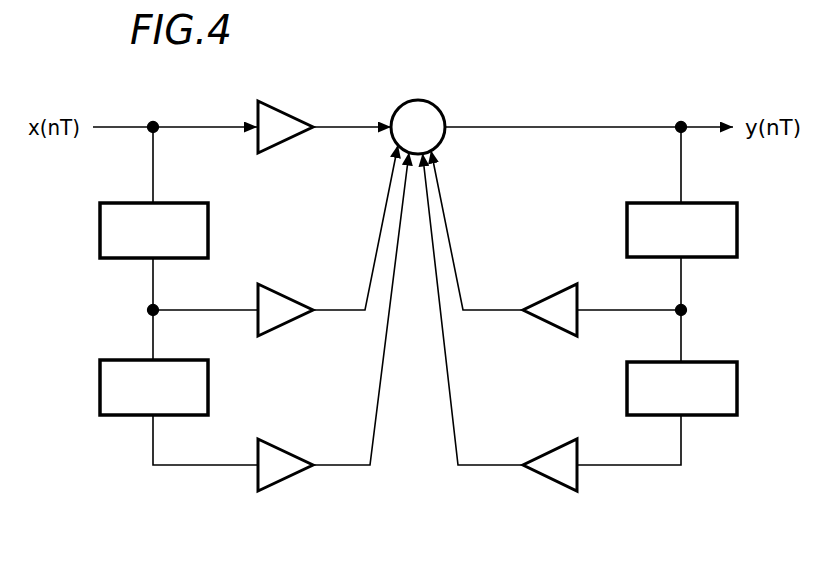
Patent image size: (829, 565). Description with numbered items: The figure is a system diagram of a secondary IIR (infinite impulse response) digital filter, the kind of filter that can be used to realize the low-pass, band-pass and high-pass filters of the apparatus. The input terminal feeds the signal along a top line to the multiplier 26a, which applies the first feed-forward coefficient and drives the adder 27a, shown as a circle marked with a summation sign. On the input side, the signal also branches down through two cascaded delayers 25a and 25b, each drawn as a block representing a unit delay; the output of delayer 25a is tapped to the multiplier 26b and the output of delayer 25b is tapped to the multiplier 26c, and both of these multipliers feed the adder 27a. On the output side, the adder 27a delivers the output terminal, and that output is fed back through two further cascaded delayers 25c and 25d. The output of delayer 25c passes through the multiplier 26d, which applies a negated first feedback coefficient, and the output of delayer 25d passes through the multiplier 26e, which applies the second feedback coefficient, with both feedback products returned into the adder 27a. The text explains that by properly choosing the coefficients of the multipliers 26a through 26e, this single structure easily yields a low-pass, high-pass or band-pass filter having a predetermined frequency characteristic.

The delayer 25a is at (178, 203).
The delayer 25b is at (179, 327).
The delayer 25c is at (704, 203).
The delayer 25d is at (704, 362).
The multiplier 26a is at (271, 147).
The multiplier 26b is at (273, 330).
The multiplier 26c is at (273, 485).
The multiplier 26d is at (543, 326).
The multiplier 26e is at (543, 481).
The adder 27a is at (421, 100).